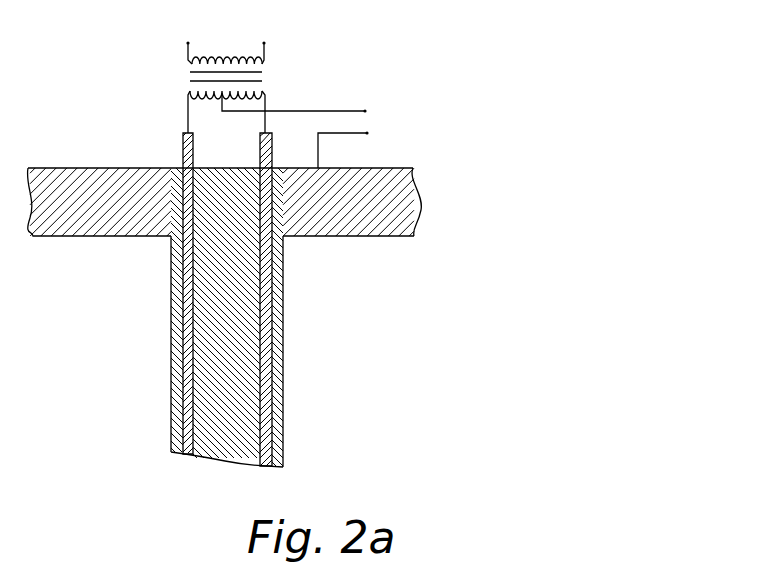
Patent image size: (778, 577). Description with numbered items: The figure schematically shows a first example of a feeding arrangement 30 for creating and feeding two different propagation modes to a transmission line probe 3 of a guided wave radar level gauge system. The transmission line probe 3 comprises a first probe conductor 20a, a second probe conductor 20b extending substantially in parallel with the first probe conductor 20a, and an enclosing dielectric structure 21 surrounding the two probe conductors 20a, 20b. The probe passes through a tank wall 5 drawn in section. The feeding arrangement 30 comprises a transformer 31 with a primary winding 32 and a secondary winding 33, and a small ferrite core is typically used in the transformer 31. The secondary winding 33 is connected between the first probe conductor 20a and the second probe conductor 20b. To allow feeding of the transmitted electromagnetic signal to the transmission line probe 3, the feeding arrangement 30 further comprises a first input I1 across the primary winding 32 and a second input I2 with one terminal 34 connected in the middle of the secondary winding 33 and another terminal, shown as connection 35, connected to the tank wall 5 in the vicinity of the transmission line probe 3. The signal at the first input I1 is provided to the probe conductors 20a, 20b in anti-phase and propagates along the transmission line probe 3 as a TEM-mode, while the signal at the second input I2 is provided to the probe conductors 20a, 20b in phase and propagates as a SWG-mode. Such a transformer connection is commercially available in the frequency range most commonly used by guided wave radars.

The transmission line probe 3 is at (240, 300).
The tank wall 5 is at (352, 236).
The first probe conductor 20a is at (187, 395).
The second probe conductor 20b is at (272, 427).
The enclosing dielectric structure 21 is at (177, 345).
The feeding arrangement 30 is at (219, 68).
The transformer 31 is at (177, 75).
The primary winding 32 is at (188, 56).
The secondary winding 33 is at (188, 97).
The terminal 34 is at (367, 110).
The connection line 35 is at (367, 134).
The first input I1 is at (227, 17).
The second input I2 is at (389, 128).